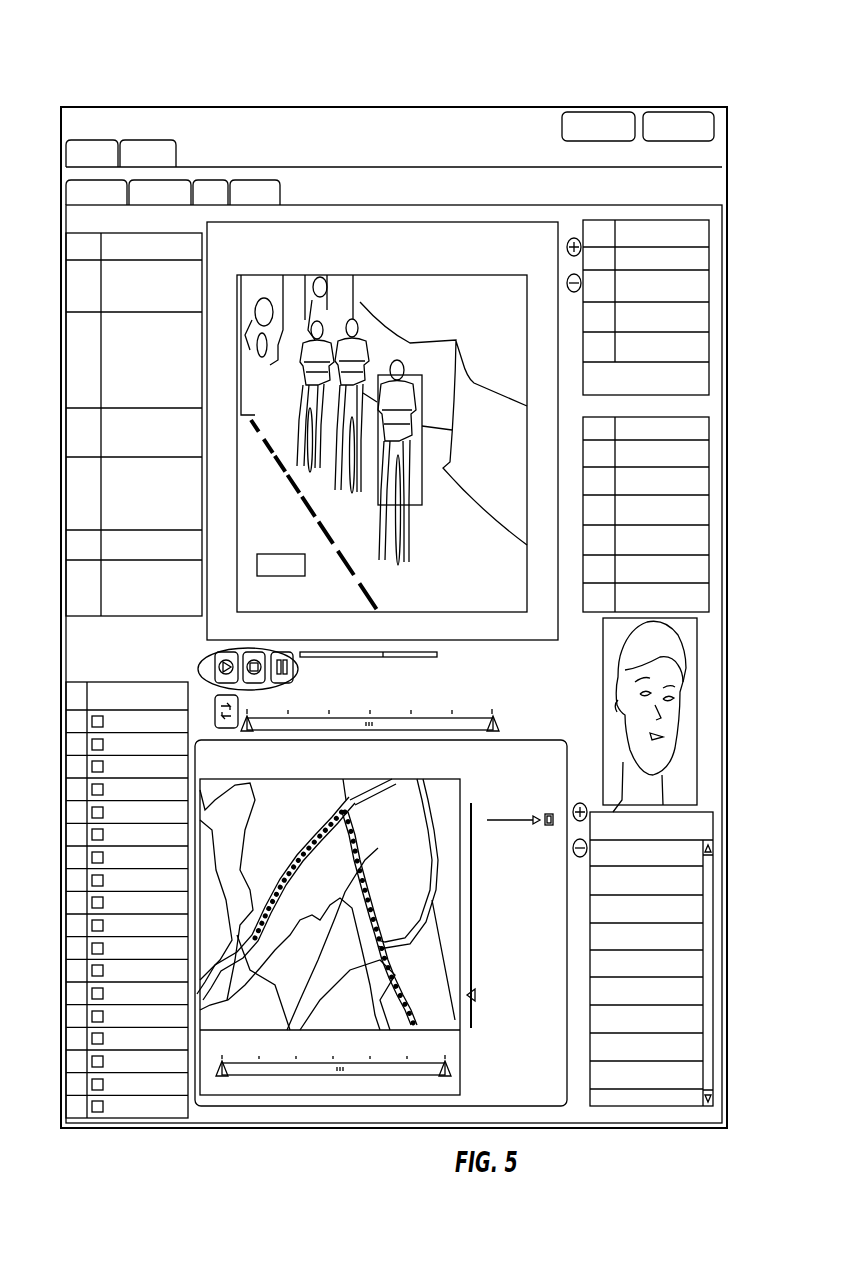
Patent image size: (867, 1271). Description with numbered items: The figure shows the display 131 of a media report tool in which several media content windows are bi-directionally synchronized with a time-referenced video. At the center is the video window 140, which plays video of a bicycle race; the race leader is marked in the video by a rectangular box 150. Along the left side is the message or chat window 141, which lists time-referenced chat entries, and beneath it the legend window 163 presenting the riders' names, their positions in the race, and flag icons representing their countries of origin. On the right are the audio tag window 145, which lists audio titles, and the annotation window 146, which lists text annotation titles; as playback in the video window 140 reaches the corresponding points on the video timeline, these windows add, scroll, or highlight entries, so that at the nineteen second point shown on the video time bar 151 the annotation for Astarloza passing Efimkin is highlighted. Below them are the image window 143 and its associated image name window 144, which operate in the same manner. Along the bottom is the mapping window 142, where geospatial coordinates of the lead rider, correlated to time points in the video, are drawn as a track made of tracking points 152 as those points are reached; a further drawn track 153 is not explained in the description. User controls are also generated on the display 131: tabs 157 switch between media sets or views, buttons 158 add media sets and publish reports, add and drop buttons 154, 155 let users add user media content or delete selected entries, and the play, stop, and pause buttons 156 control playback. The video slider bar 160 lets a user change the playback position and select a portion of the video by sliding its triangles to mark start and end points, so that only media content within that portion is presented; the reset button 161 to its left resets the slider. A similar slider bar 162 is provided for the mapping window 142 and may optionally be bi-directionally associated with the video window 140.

The display 131 is at (728, 171).
The tabs 157 is at (142, 143).
The buttons 158 is at (648, 110).
The message or chat window 141 is at (65, 350).
The video window 140 is at (343, 222).
The rectangular box 150 is at (408, 372).
The add and drop buttons 155 is at (572, 238).
The add and drop buttons 154 is at (572, 273).
The audio tag window 145 is at (710, 380).
The annotation window 146 is at (710, 510).
The image window 143 is at (697, 675).
The image name window 144 is at (713, 945).
The video playback play/stop/pause buttons 156 is at (198, 668).
The reset button 161 is at (213, 707).
The video time bar 151 is at (505, 653).
The video slider bar 160 is at (503, 732).
The legend window 163 is at (65, 900).
The mapping window 142 is at (378, 1107).
The tracking points 152 is at (357, 848).
The second tracking path 153 is at (390, 978).
The slider bar 162 is at (238, 1073).